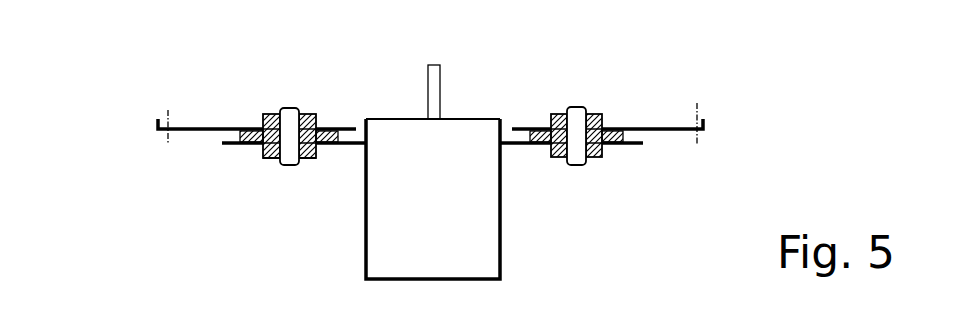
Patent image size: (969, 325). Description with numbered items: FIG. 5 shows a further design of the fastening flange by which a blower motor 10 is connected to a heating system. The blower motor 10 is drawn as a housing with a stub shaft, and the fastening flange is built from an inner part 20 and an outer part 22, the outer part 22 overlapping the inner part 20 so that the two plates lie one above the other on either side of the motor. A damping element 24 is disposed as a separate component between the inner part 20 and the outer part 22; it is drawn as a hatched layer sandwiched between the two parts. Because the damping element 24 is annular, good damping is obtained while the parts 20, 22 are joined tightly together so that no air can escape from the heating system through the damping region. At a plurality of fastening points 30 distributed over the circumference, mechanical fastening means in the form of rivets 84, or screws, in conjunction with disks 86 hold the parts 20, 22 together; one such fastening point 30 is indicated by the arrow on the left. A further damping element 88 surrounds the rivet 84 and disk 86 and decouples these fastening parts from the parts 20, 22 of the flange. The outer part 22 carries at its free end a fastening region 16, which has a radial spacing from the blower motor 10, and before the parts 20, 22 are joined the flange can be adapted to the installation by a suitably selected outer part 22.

The blower motor 10 is at (473, 257).
The fastening region 16 is at (699, 108).
The inner part 20 is at (343, 143).
The outer part 22 is at (185, 127).
The damping element 24 is at (615, 127).
The fastening point 30 is at (312, 92).
The rivet 84 is at (283, 108).
The disk 86 is at (273, 158).
The further damping element 88 is at (263, 148).